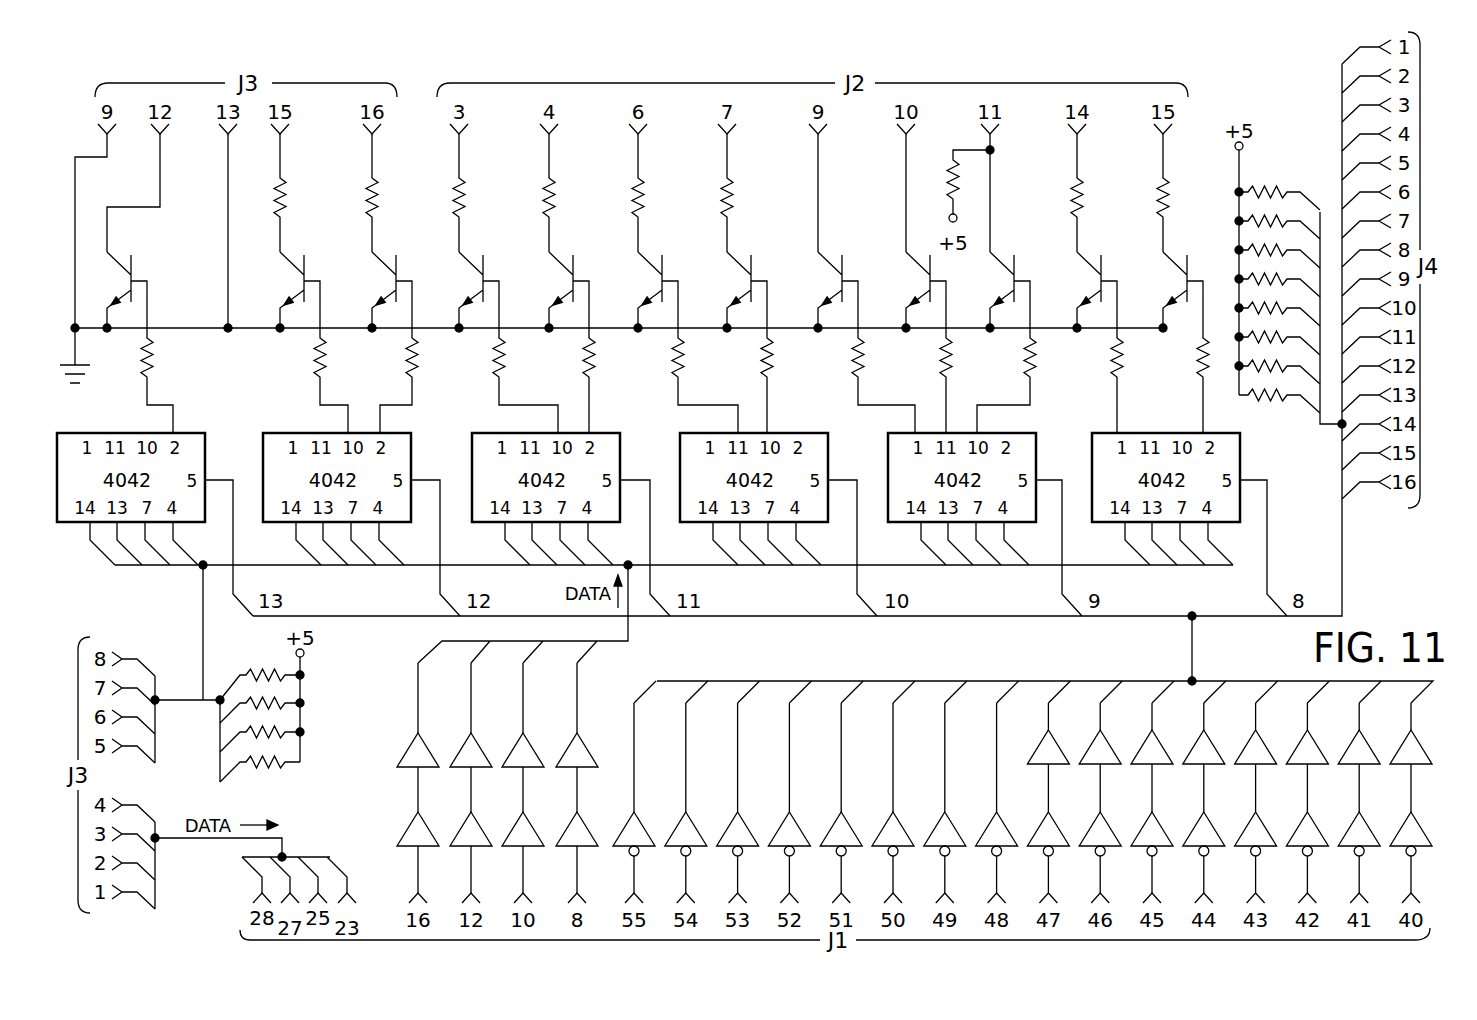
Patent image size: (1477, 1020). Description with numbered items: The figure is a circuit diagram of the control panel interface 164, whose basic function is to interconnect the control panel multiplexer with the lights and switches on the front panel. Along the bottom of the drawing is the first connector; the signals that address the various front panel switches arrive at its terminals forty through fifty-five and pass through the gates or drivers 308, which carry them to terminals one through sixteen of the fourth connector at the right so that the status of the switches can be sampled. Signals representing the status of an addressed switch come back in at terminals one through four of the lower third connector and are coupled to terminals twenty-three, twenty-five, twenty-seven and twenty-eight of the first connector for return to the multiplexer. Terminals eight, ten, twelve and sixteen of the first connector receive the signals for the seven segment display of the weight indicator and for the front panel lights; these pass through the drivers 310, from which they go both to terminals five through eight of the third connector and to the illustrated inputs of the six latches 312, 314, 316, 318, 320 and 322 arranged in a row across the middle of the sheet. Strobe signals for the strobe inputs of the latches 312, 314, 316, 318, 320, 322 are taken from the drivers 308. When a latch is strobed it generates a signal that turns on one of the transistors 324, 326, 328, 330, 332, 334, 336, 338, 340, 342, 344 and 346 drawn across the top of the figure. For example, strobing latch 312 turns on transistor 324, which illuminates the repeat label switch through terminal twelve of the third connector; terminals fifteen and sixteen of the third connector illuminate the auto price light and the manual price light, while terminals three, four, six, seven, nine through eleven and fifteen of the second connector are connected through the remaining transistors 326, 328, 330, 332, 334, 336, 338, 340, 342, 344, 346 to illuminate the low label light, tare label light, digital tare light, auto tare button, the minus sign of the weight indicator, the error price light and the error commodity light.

The control panel interface 164 is at (1130, 656).
The gates or drivers 308 is at (1045, 818).
The drivers 310 is at (403, 833).
The latch 312 is at (203, 433).
The latch 314 is at (316, 432).
The latch 316 is at (520, 432).
The latch 318 is at (728, 432).
The latch 320 is at (902, 432).
The latch 322 is at (1106, 432).
The transistor 324 is at (131, 258).
The transistor 326 is at (304, 258).
The transistor 328 is at (396, 258).
The transistor 330 is at (483, 258).
The transistor 332 is at (573, 258).
The transistor 334 is at (662, 258).
The transistor 336 is at (751, 258).
The transistor 338 is at (842, 258).
The transistor 340 is at (930, 262).
The transistor 342 is at (1014, 258).
The transistor 344 is at (1101, 258).
The transistor 346 is at (1187, 258).